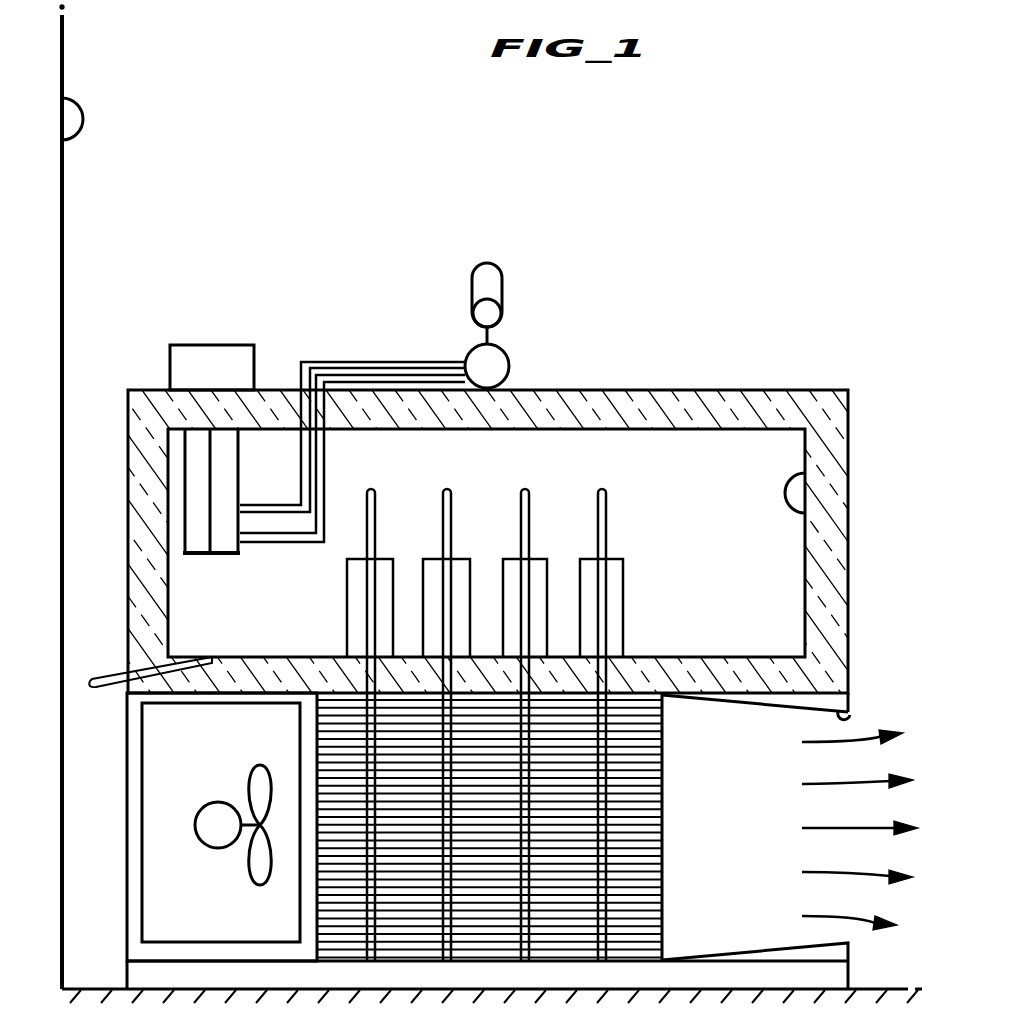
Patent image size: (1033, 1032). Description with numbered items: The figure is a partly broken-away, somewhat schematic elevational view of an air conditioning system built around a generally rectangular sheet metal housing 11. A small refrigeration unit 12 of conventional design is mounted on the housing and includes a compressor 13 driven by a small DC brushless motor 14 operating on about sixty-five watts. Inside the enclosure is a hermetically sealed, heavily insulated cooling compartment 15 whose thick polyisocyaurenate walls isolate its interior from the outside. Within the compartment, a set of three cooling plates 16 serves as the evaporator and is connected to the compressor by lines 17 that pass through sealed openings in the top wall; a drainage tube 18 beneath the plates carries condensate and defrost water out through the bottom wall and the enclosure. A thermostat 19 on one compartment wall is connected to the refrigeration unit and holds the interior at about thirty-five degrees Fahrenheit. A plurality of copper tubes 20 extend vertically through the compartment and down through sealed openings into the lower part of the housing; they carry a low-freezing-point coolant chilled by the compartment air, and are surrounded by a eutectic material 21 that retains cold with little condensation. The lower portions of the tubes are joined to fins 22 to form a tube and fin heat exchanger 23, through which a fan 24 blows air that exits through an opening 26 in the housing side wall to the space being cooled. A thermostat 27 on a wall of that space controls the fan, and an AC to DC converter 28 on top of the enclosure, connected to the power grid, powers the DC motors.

The sheet metal housing 11 is at (125, 760).
The refrigeration unit 12 is at (532, 332).
The compressor 13 is at (463, 357).
The DC brushless motor 14 is at (485, 277).
The cooling compartment 15 is at (704, 455).
The cooling plates 16 is at (187, 537).
The lines 17 is at (272, 510).
The drainage tube 18 is at (100, 672).
The thermostat 19 is at (797, 494).
The copper tubes 20 is at (606, 514).
The eutectic material 21 is at (622, 592).
The fins 22 is at (638, 832).
The heat exchanger 23 is at (310, 738).
The fan 24 is at (223, 827).
The opening 26 is at (852, 716).
The thermostat 27 is at (72, 118).
The AC to DC converter 28 is at (212, 345).